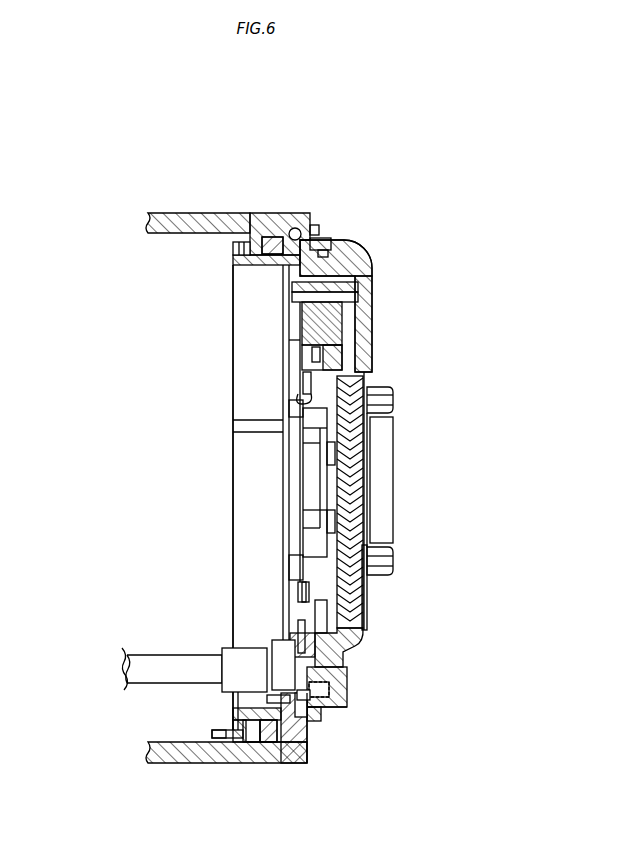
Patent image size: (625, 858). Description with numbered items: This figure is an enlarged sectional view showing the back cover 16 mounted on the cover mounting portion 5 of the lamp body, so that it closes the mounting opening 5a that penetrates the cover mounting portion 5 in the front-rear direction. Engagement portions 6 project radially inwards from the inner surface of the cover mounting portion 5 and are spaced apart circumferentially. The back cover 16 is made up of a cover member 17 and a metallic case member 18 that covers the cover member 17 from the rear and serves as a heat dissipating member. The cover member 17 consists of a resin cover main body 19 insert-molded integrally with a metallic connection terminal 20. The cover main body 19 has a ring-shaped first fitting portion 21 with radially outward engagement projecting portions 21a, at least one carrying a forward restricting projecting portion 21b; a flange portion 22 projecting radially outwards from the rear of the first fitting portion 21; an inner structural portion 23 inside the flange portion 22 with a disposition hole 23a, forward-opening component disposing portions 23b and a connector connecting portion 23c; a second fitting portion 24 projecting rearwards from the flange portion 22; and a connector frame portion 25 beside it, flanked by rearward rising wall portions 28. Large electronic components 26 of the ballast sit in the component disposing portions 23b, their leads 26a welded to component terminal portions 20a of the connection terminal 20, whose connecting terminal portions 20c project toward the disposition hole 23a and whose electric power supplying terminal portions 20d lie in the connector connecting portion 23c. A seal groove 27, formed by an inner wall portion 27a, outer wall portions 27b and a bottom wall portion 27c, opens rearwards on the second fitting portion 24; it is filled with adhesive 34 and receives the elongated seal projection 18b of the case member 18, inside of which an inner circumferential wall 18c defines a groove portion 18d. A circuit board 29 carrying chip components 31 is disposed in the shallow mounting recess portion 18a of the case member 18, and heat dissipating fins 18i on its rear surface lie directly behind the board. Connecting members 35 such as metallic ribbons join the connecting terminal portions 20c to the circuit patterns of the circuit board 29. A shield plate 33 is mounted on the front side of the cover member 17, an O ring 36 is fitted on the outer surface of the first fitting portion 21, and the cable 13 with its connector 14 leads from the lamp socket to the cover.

The cover mounting portion 5 is at (196, 213).
The mounting opening 5a is at (312, 226).
The engagement portion 6 is at (262, 250).
The cable 13 is at (145, 661).
The connector 14 is at (285, 635).
The back cover 16 is at (237, 104).
The cover member 17 is at (306, 236).
The case member 18 is at (372, 266).
The mounting recess portion 18a is at (362, 319).
The elongated seal projection 18b is at (346, 730).
The inner circumferential wall 18c is at (343, 670).
The groove portion 18d is at (347, 697).
The heat dissipating fin 18i is at (362, 632).
The cover main body 19 is at (308, 722).
The connection terminal 20 is at (342, 347).
The component terminal portion 20a is at (318, 360).
The connecting terminal portion 20c is at (309, 380).
The electric power supplying terminal portion 20d is at (290, 613).
The first fitting portion 21 is at (235, 258).
The engagement projecting portion 21a is at (234, 244).
The restricting projecting portion 21b is at (222, 737).
The flange portion 22 is at (298, 763).
The inner structural portion 23 is at (347, 657).
The disposition hole 23a is at (292, 588).
The component disposing portion 23b is at (343, 298).
The connector connecting portion 23c is at (290, 628).
The second fitting portion 24 is at (328, 246).
The connector frame portion 25 is at (386, 448).
The electronic component 26 is at (292, 328).
The lead 26a is at (292, 346).
The seal groove 27 is at (330, 719).
The inner wall portion 27a is at (345, 713).
The outer wall portion 27b is at (321, 705).
The bottom wall portion 27c is at (232, 709).
The rising wall portion 28 is at (393, 396).
The circuit board 29 is at (350, 491).
The chip component 31 is at (327, 460).
The shield plate 33 is at (253, 246).
The adhesive 34 is at (336, 252).
The connecting member 35 is at (302, 420).
The O ring 36 is at (265, 765).